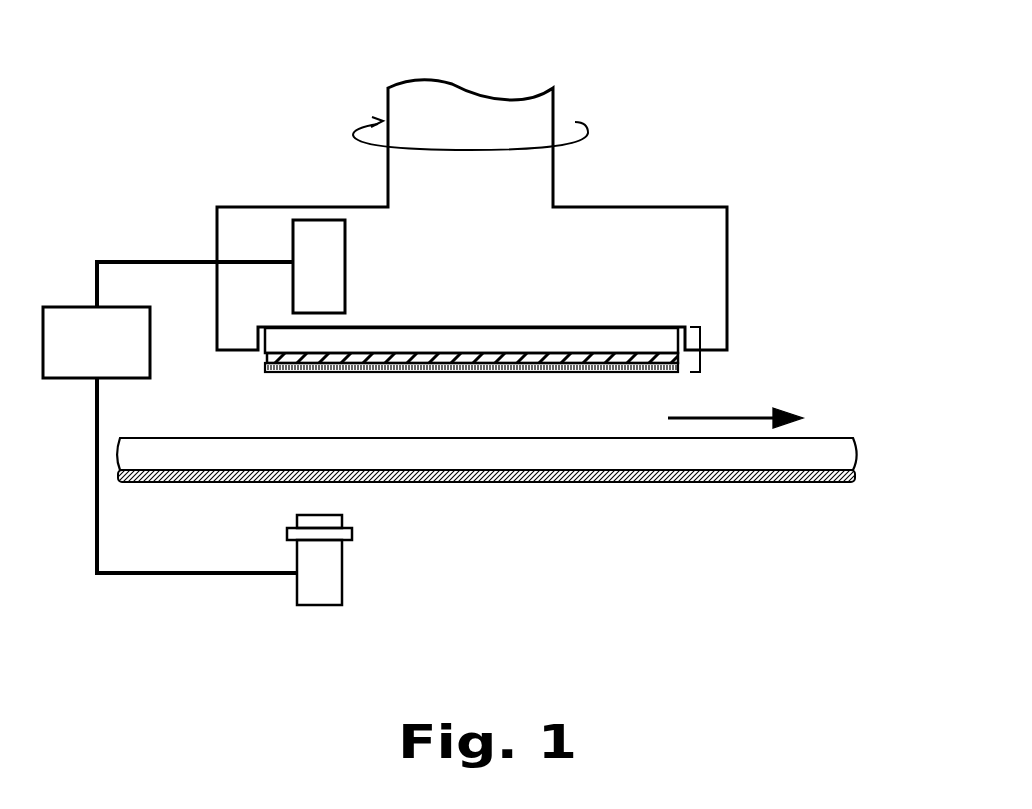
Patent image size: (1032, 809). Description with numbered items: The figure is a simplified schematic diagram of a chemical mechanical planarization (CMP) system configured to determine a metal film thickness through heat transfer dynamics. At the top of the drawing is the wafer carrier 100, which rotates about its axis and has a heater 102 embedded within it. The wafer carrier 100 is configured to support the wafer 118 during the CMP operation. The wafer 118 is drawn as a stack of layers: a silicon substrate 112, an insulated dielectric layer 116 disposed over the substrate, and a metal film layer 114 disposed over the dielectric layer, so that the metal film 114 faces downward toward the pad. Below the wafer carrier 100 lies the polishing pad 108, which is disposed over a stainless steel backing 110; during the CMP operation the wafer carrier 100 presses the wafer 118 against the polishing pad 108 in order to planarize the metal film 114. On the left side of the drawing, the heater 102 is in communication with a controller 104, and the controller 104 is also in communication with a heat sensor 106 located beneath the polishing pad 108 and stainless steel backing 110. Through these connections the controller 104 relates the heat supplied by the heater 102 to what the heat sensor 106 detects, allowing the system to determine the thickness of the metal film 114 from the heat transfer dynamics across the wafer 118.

The wafer carrier 100 is at (684, 207).
The heater 102 is at (299, 220).
The controller 104 is at (86, 380).
The heat sensor 106 is at (295, 600).
The polishing pad 108 is at (857, 452).
The stainless steel backing 110 is at (856, 480).
The silicon substrate 112 is at (258, 343).
The metal film layer 114 is at (260, 370).
The insulated dielectric layer 116 is at (260, 360).
The wafer 118 is at (703, 361).